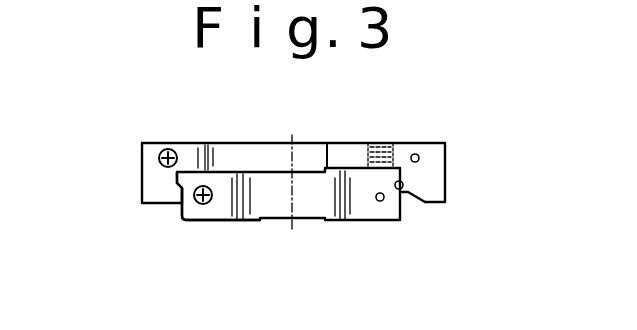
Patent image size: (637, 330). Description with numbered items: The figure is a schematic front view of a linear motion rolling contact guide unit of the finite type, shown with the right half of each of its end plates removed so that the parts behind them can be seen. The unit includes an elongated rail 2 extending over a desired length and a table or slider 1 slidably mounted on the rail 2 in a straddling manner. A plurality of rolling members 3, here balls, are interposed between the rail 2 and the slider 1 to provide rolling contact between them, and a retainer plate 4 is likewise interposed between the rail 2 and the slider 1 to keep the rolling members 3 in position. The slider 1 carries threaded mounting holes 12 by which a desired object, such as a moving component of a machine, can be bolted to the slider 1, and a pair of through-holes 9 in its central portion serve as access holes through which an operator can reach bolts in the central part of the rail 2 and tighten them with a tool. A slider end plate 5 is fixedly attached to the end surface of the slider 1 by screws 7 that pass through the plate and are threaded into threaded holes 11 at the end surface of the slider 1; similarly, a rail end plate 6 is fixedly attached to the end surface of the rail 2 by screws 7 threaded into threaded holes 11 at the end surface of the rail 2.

The slider 1 is at (437, 152).
The rail 2 is at (398, 210).
The rolling members 3 is at (408, 184).
The retainer plate 4 is at (410, 187).
The slider end plate 5 is at (145, 176).
The rail end plate 6 is at (220, 210).
The screws 7 is at (168, 149).
The through-holes 9 is at (345, 152).
The threaded holes 11 is at (413, 154).
The mounting holes 12 is at (382, 143).